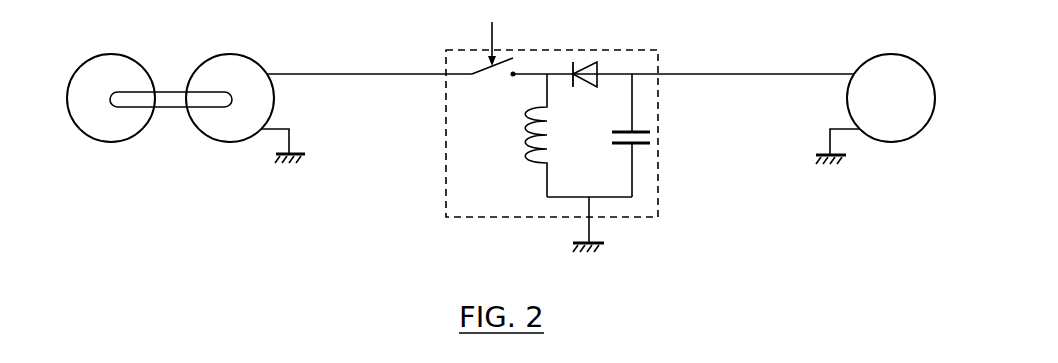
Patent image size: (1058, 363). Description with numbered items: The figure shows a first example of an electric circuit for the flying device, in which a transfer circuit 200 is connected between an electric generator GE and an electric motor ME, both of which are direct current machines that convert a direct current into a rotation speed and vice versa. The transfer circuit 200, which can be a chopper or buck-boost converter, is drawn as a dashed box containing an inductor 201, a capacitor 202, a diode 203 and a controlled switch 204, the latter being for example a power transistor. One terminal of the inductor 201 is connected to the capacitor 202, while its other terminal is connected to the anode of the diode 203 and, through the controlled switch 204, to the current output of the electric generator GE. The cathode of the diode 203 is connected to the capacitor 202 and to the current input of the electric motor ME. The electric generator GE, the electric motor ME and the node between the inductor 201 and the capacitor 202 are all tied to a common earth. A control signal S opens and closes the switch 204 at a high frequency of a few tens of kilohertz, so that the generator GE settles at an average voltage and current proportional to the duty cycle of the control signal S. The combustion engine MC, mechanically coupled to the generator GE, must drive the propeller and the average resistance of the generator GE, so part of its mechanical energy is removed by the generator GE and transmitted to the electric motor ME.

The transfer circuit 200 is at (658, 50).
The inductor 201 is at (528, 140).
The capacitor 202 is at (612, 137).
The diode 203 is at (582, 84).
The controlled switch 204 is at (487, 66).
The control signal S is at (492, 35).
The combustion engine MC is at (93, 142).
The electric generator GE is at (209, 142).
The electric motor ME is at (903, 143).